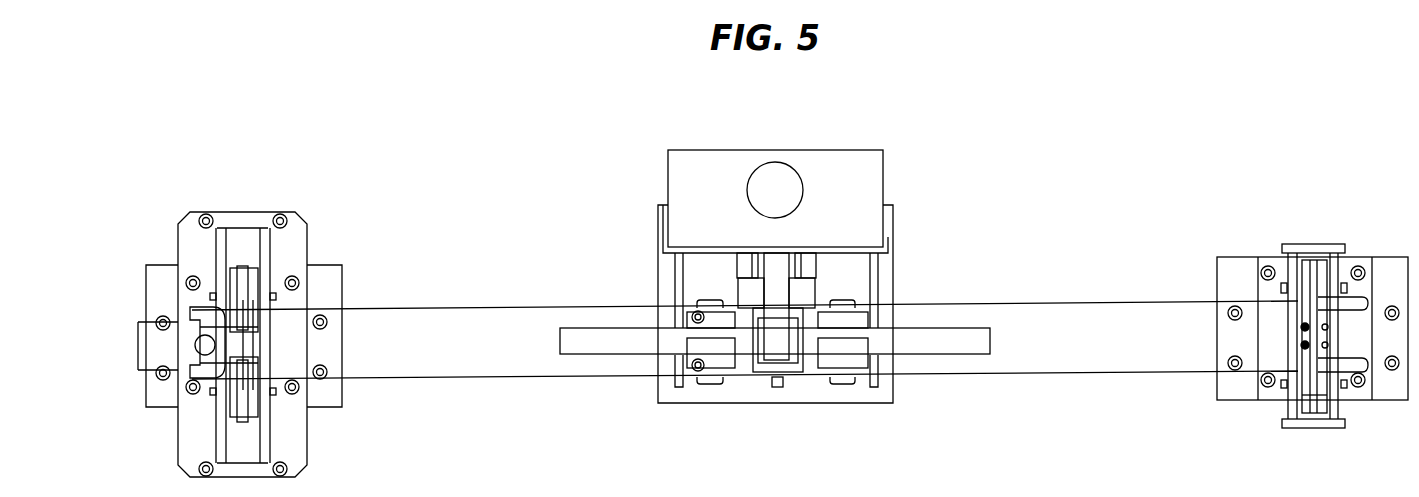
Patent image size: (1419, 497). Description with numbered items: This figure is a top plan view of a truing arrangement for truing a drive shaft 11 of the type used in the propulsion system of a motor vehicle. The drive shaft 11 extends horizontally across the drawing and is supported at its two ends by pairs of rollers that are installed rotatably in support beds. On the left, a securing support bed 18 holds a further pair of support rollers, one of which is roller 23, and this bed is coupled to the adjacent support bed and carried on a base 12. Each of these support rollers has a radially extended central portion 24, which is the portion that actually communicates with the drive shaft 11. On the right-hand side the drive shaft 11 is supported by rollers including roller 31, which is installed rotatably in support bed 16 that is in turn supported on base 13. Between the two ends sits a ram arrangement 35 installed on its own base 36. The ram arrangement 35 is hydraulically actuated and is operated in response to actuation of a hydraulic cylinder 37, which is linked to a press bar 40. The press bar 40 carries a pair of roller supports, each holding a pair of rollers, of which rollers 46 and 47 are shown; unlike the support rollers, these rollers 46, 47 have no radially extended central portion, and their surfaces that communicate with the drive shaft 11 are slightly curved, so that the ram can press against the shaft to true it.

The drive shaft 11 is at (1103, 320).
The base 12 is at (333, 296).
The base 13 is at (1385, 262).
The support bed 16 is at (1303, 248).
The securing support bed 18 is at (242, 217).
The roller 23 is at (260, 277).
The radially extended central portion 24 is at (235, 413).
The roller 31 is at (1322, 258).
The ram arrangement 35 is at (906, 157).
The base 36 is at (1330, 405).
The hydraulic cylinder 37 is at (780, 170).
The press bar 40 is at (933, 334).
The roller 46 is at (710, 385).
The roller 47 is at (845, 385).